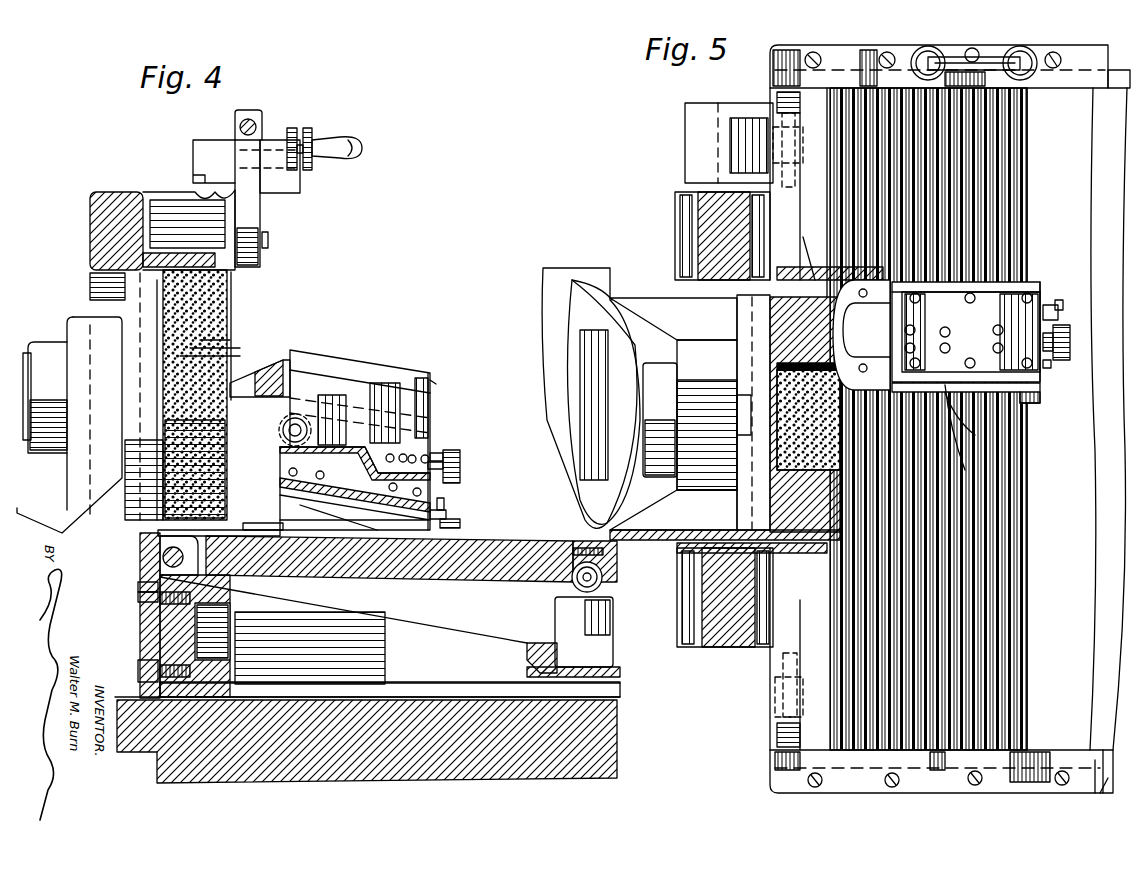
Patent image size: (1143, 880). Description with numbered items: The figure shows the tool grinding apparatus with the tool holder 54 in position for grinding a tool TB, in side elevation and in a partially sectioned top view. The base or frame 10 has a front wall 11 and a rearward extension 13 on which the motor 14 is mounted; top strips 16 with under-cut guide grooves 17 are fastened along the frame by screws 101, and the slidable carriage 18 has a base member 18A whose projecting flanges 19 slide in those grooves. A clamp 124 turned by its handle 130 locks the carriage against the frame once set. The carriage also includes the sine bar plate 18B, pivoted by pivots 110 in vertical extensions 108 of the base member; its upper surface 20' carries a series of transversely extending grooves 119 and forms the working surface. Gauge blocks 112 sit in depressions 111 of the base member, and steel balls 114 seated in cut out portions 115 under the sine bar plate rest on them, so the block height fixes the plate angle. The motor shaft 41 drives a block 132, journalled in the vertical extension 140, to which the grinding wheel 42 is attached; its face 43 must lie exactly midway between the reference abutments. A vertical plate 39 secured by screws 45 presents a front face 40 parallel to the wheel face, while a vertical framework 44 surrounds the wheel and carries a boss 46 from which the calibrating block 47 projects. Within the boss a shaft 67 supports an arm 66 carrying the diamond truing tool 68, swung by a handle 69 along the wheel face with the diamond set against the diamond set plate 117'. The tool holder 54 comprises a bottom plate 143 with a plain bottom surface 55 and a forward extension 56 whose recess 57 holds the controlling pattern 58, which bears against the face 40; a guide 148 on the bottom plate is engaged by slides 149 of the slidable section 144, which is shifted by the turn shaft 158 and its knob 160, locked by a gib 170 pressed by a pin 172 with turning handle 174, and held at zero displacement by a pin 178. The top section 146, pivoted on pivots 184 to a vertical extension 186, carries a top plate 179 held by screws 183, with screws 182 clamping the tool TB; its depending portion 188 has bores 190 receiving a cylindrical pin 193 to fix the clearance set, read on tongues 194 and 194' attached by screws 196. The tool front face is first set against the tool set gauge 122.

In FIG. 4, the base or frame 10 is at (617, 735).
In FIG. 4, the front wall 11 is at (620, 707).
In FIG. 5, the rearward extension 13 is at (607, 261).
In FIG. 5, the motor 14 is at (607, 300).
In FIG. 4, the top strips 16 is at (480, 620).
In FIG. 5, the top strips 16 is at (775, 62).
In FIG. 5, the guide grooves 17 is at (1082, 58).
In FIG. 5, the slidable carriage 18 is at (1118, 654).
In FIG. 4, the base member 18A is at (510, 615).
In FIG. 5, the base member 18A is at (1102, 235).
In FIG. 4, the sine bar plate 18B is at (572, 543).
In FIG. 5, the sine bar plate 18B is at (1056, 535).
In FIG. 4, the projecting flanges 19 is at (410, 694).
In FIG. 5, the projecting flanges 19 is at (1115, 72).
In FIG. 4, the upper surface of sine bar plate 20' is at (389, 551).
In FIG. 5, the upper surface of sine bar plate 20' is at (1047, 638).
In FIG. 4, the vertical plate 39 is at (160, 557).
In FIG. 5, the vertical plate 39 is at (737, 318).
In FIG. 4, the front face of reference abutment 40 is at (280, 500).
In FIG. 5, the motor shaft 41 is at (758, 395).
In FIG. 4, the grinding wheel 42 is at (205, 298).
In FIG. 5, the grinding wheel 42 is at (790, 295).
In FIG. 4, the face of grinding wheel 43 is at (232, 312).
In FIG. 5, the face of grinding wheel 43 is at (850, 535).
In FIG. 4, the vertical framework 44 is at (90, 230).
In FIG. 5, the vertical framework 44 is at (712, 206).
In FIG. 4, the screws 45 is at (160, 603).
In FIG. 4, the boss 46 is at (210, 208).
In FIG. 4, the calibrating block 47 is at (300, 188).
In FIG. 4, the tool holder 54 is at (436, 389).
In FIG. 5, the tool holder 54 is at (1052, 412).
In FIG. 4, the bottom surface 55 is at (356, 565).
In FIG. 4, the forward extension 56 is at (232, 528).
In FIG. 5, the forward extension 56 is at (872, 374).
In FIG. 4, the recess 57 is at (270, 530).
In FIG. 4, the controlling pattern 58 is at (140, 546).
In FIG. 5, the controlling pattern 58 is at (818, 260).
In FIG. 4, the arm 66 is at (262, 216).
In FIG. 4, the shaft 67 is at (269, 241).
In FIG. 4, the diamond truing tool 68 is at (237, 145).
In FIG. 4, the handle 69 is at (350, 140).
In FIG. 5, the screws 101 is at (816, 52).
In FIG. 4, the vertical extensions 108 is at (160, 590).
In FIG. 5, the vertical extensions 108 is at (800, 160).
In FIG. 4, the pivots 110 is at (160, 578).
In FIG. 5, the pivots 110 is at (795, 108).
In FIG. 4, the depressions 111 is at (620, 670).
In FIG. 4, the gauge blocks 112 is at (600, 615).
In FIG. 4, the steel balls 114 is at (617, 572).
In FIG. 4, the cut out portions 115 is at (617, 555).
In FIG. 4, the diamond set plate 117' is at (192, 161).
In FIG. 4, the transversely extending grooves 119 is at (330, 560).
In FIG. 5, the transversely extending grooves 119 is at (1000, 128).
In FIG. 5, the tool set gauge 122 is at (718, 143).
In FIG. 5, the clamp 124 is at (922, 48).
In FIG. 5, the handle 130 is at (1028, 42).
In FIG. 4, the block 132 is at (90, 297).
In FIG. 5, the block 132 is at (760, 532).
In FIG. 4, the vertical extension 140 is at (50, 490).
In FIG. 5, the vertical extension 140 is at (655, 305).
In FIG. 4, the bottom plate 143 is at (428, 560).
In FIG. 5, the bottom plate 143 is at (975, 410).
In FIG. 4, the slidable section 144 is at (275, 455).
In FIG. 4, the top section 146 is at (432, 378).
In FIG. 5, the top section 146 is at (1038, 292).
In FIG. 4, the guide 148 is at (383, 570).
In FIG. 4, the slides 149 is at (290, 488).
In FIG. 4, the turn shaft 158 is at (444, 456).
In FIG. 5, the turn shaft 158 is at (1050, 367).
In FIG. 4, the knob 160 is at (461, 464).
In FIG. 5, the knob 160 is at (1070, 328).
In FIG. 4, the gib 170 is at (403, 560).
In FIG. 4, the pin 172 is at (446, 516).
In FIG. 5, the pin 172 is at (1052, 305).
In FIG. 4, the turning handle 174 is at (446, 505).
In FIG. 5, the turning handle 174 is at (1063, 303).
In FIG. 4, the pin 178 is at (460, 526).
In FIG. 4, the top plate 179 is at (380, 370).
In FIG. 5, the top plate 179 is at (1000, 285).
In FIG. 5, the screws 182 is at (942, 346).
In FIG. 5, the screws 183 is at (965, 298).
In FIG. 4, the pivots 184 is at (282, 425).
In FIG. 4, the vertical extension 186 is at (280, 434).
In FIG. 4, the depending portion 188 is at (430, 455).
In FIG. 4, the aligned bores 190 is at (455, 470).
In FIG. 4, the cylindrical pin 193 is at (405, 442).
In FIG. 5, the tongue 194 is at (977, 246).
In FIG. 4, the tongue 194' is at (355, 480).
In FIG. 5, the tongue 194' is at (1005, 432).
In FIG. 4, the screws 196 is at (325, 477).
In FIG. 4, the tool TB is at (252, 368).
In FIG. 5, the tool TB is at (861, 335).